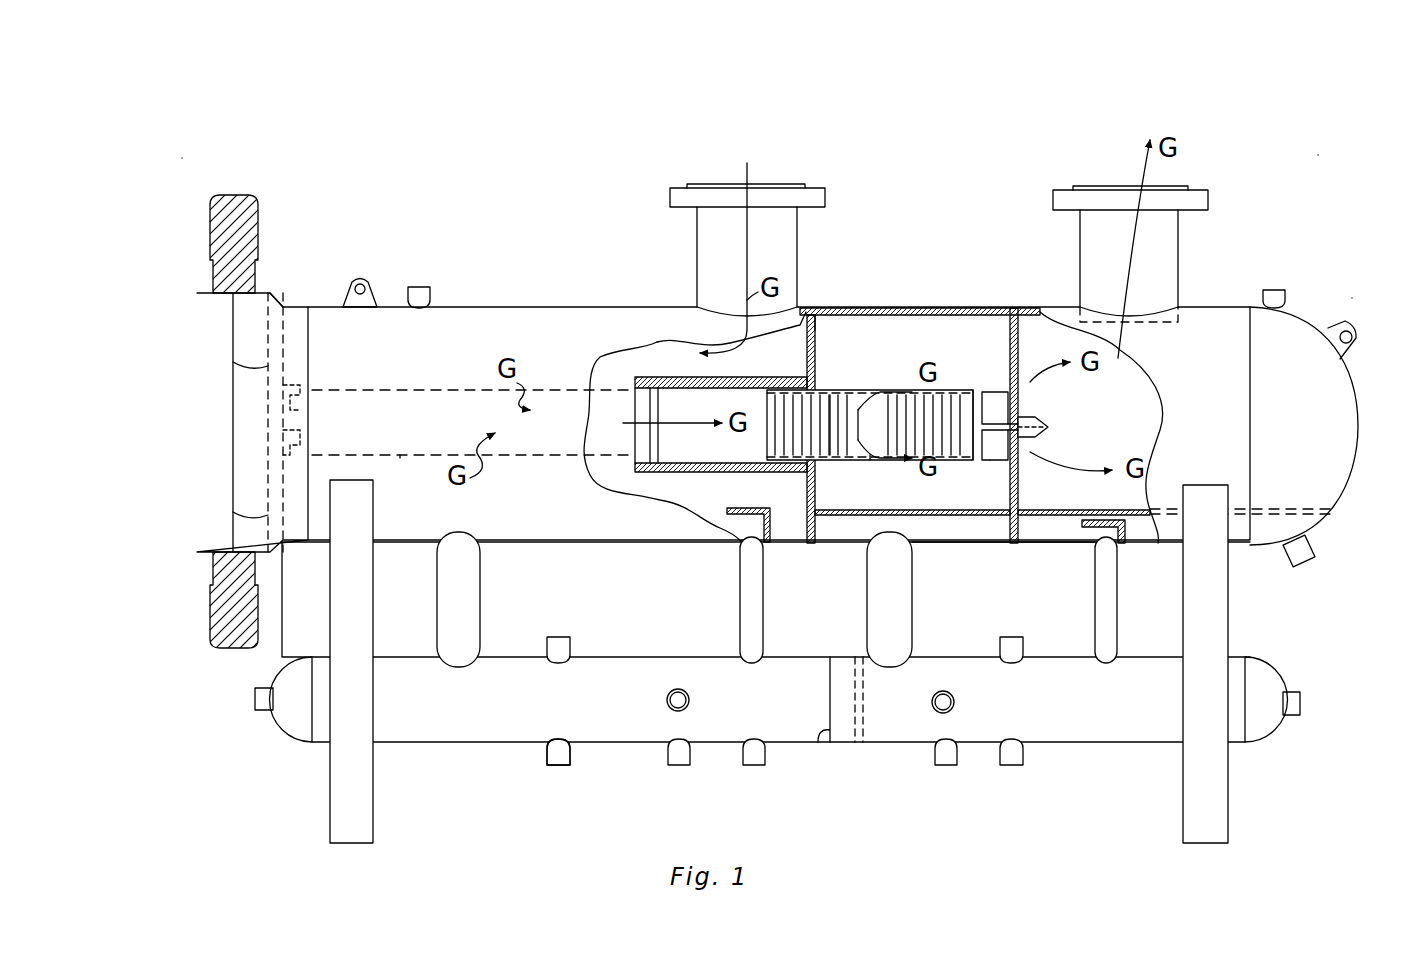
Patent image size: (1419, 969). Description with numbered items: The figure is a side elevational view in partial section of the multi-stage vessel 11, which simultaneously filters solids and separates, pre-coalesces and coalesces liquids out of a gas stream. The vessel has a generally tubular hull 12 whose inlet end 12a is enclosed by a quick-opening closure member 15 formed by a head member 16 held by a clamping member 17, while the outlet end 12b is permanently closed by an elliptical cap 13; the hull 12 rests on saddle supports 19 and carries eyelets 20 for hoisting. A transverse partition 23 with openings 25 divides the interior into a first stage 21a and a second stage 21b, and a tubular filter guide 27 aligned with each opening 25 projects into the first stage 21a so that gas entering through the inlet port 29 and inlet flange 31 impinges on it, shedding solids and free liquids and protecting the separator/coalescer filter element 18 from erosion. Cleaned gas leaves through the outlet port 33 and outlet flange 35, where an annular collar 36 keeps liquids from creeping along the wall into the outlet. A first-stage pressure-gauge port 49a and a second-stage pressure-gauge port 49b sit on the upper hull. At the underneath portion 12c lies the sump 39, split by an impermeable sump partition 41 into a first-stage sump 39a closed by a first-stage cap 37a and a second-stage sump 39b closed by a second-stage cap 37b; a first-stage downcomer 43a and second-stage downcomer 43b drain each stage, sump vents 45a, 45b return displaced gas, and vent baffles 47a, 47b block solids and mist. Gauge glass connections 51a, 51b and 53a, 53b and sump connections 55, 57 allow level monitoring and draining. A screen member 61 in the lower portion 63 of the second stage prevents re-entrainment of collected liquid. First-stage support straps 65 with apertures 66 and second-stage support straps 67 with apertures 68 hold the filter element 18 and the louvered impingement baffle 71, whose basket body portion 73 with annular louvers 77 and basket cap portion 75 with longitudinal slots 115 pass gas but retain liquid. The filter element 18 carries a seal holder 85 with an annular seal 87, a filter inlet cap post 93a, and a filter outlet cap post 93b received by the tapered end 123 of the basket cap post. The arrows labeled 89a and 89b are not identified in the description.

The multi-stage vessel 11 is at (1322, 152).
The hull 12 is at (508, 307).
The inlet end 12a is at (178, 155).
The outlet end 12b is at (1355, 296).
The underneath portion 12c is at (583, 548).
The cap 13 is at (1358, 425).
The closure member 15 is at (283, 303).
The head member 16 is at (197, 448).
The clamping member 17 is at (210, 240).
The separator/coalescer filter element 18 is at (560, 384).
The saddle supports 19 is at (330, 812).
The eyelets 20 is at (355, 282).
The first stage 21a is at (695, 485).
The second stage 21b is at (918, 333).
The partition 23 is at (815, 320).
The openings 25 is at (838, 385).
The filter guide 27 is at (665, 377).
The inlet port 29 is at (797, 258).
The inlet flange 31 is at (825, 198).
The outlet port 33 is at (1178, 245).
The outlet flange 35 is at (1208, 202).
The annular collar 36 is at (1180, 322).
The first-stage cap 37a is at (273, 718).
The second-stage cap 37b is at (1270, 735).
The sump 39 is at (785, 752).
The first-stage sump 39a is at (473, 725).
The second-stage sump 39b is at (1060, 725).
The sump partition 41 is at (830, 742).
The first-stage downcomer 43a is at (485, 615).
The second-stage downcomer 43b is at (915, 620).
The first-stage sump vent 45a is at (763, 618).
The second-stage sump vent 45b is at (1117, 622).
The first-stage vent baffle 47a is at (745, 508).
The second-stage vent baffle 47b is at (1095, 543).
The first-stage pressure-gauge port 49a is at (418, 285).
The second-stage pressure-gauge port 49b is at (1275, 288).
The first-stage gauge glass connection 51a is at (570, 648).
The first-stage gauge glass connection 51b is at (547, 758).
The second-stage gauge glass connection 53a is at (1023, 648).
The second-stage gauge glass connection 53b is at (1000, 758).
The first-stage sump connections 55 is at (689, 703).
The second-stage sump connections 57 is at (955, 703).
The screen member 61 is at (1100, 510).
The lower portion 63 is at (942, 543).
The first-stage support straps 65 is at (233, 362).
The apertures 66 is at (284, 410).
The second-stage support straps 67 is at (1018, 330).
The apertures 68 is at (1022, 408).
The louvered impingement baffle 71 is at (945, 390).
The basket body portion 73 is at (870, 463).
The basket cap portion 75 is at (990, 463).
The annular louvers 77 is at (830, 445).
The seal holder 85 is at (658, 440).
The annular seal 87 is at (650, 440).
The flow path 89a is at (400, 460).
The flow path 89b is at (873, 385).
The filter inlet cap post 93a is at (263, 440).
The filter outlet cap post 93b is at (1035, 415).
The longitudinal slots 115 is at (985, 392).
The tapered end 123 is at (1045, 432).